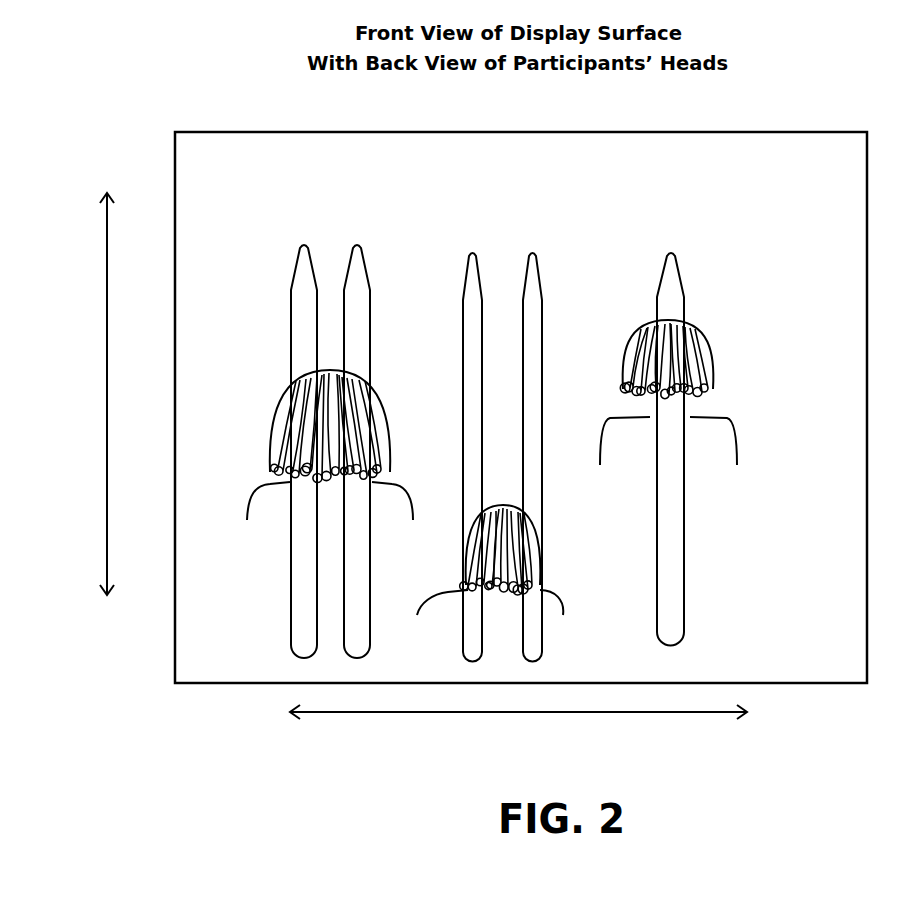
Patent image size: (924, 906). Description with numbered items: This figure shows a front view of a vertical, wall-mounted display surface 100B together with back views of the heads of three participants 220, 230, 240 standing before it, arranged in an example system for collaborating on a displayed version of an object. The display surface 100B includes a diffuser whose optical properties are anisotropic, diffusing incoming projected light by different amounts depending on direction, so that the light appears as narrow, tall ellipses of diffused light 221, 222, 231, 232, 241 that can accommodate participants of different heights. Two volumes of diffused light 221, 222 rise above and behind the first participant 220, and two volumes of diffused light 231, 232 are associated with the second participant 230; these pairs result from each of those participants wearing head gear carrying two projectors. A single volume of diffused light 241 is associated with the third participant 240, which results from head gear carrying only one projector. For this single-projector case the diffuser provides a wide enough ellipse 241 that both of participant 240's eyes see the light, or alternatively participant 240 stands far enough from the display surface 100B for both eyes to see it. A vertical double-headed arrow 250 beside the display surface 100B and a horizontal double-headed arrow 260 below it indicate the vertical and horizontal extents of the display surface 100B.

The vertical display surface 100B is at (852, 171).
The participant 220 is at (288, 413).
The volume of diffused light 221 is at (301, 245).
The volume of diffused light 222 is at (360, 245).
The participant 230 is at (535, 533).
The volume of diffused light 231 is at (470, 252).
The volume of diffused light 232 is at (533, 252).
The participant 240 is at (713, 352).
The volume of diffused light 241 is at (672, 250).
The vertical dimension V of display surface 250 is at (107, 392).
The horizontal dimension H of display surface 260 is at (507, 713).